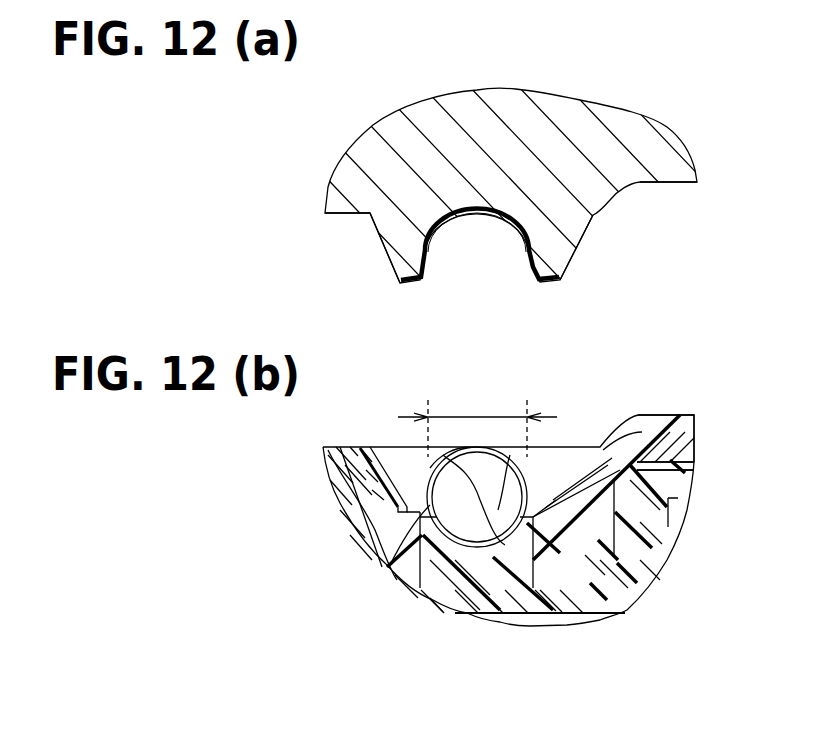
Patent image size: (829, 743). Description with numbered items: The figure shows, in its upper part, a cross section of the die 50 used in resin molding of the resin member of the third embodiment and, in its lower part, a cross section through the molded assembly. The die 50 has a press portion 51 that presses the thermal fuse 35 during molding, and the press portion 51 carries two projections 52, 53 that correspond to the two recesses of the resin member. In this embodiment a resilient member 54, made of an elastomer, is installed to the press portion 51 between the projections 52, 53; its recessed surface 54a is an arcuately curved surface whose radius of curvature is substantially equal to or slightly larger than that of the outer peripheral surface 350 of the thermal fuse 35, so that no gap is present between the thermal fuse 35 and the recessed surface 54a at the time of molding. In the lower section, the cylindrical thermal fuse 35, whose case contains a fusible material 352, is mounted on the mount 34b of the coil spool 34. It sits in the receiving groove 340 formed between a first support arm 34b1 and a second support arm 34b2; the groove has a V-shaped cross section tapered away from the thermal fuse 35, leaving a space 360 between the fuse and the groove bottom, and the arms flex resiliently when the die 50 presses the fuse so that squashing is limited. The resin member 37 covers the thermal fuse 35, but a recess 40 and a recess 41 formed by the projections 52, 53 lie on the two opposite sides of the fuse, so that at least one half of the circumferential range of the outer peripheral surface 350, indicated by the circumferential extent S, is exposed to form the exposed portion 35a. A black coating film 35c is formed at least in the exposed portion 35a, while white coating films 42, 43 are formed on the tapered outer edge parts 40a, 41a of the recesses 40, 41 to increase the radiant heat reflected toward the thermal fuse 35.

The die 50 is at (570, 92).
The press portion 51 is at (478, 207).
The projection 52 is at (558, 246).
The projection 53 is at (395, 241).
The resilient member 54 is at (512, 228).
The recessed surface 54a is at (470, 218).
The coil spool 34 is at (662, 535).
The mount 34b is at (553, 597).
The first support arm 34b1 is at (420, 600).
The second support arm 34b2 is at (650, 565).
The thermal fuse 35 is at (490, 565).
The exposed portion 35a is at (443, 455).
The coating film 35c is at (416, 555).
The outer peripheral surface 350 is at (513, 583).
The fusible material 352 is at (393, 565).
The space 360 is at (477, 512).
The resin member 37 is at (628, 440).
The recess 40 is at (580, 452).
The outer edge part 40a is at (668, 488).
The recess 41 is at (405, 500).
The outer edge part 41a is at (365, 512).
The coating film 42 is at (690, 469).
The coating film 43 is at (335, 462).
The receiving groove 340 is at (553, 457).
The circumferential extent S is at (482, 415).